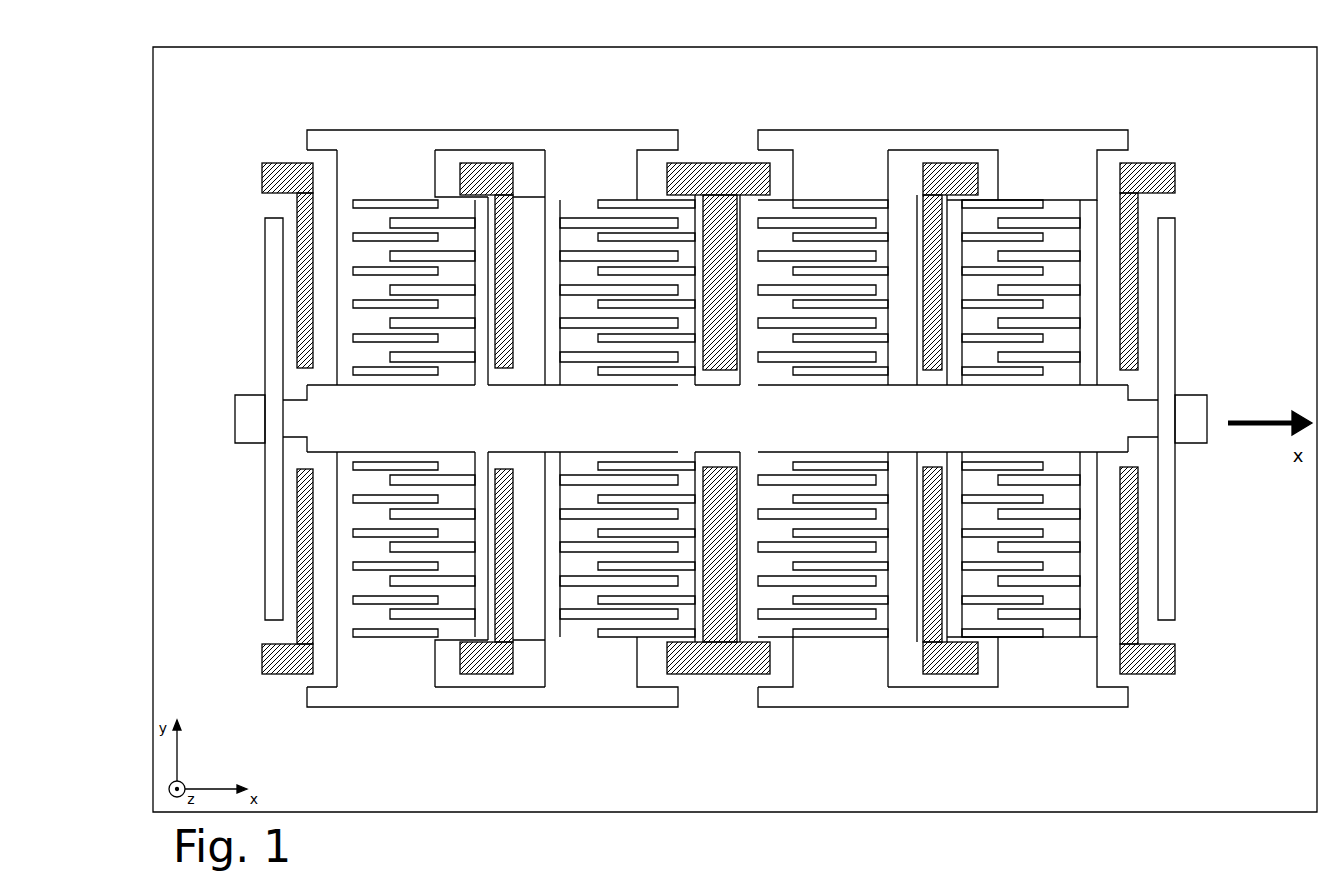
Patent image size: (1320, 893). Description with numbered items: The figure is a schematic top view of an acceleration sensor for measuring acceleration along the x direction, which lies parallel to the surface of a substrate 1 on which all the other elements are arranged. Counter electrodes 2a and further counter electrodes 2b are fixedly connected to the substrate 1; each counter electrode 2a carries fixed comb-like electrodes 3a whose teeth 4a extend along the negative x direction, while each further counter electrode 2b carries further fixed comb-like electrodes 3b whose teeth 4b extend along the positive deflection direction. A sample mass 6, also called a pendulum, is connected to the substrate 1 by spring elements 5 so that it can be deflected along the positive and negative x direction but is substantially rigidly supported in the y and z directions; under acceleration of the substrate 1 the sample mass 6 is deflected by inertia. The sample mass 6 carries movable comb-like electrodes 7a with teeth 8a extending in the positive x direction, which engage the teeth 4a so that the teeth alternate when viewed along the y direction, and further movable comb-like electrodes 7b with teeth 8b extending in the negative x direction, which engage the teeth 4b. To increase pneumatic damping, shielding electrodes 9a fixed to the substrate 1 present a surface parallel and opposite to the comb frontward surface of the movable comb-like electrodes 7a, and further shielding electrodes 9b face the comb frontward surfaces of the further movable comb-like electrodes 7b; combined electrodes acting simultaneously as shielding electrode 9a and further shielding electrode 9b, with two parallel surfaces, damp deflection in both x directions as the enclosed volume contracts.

The substrate 1 is at (1052, 796).
The counter electrode 2a is at (842, 150).
The further counter electrode 2b is at (368, 153).
The fixed comb-like electrode 3a is at (883, 210).
The further fixed comb-like electrode 3b is at (343, 212).
The teeth 4a is at (1082, 362).
The teeth 4b is at (576, 368).
The spring element 5 is at (272, 533).
The sample mass 6 is at (328, 422).
The movable comb-like electrode 7a is at (750, 215).
The further movable comb-like electrode 7b is at (470, 205).
The teeth 8a is at (981, 348).
The teeth 8b is at (633, 350).
The shielding electrode 9a is at (727, 282).
The further shielding electrode 9b is at (493, 307).